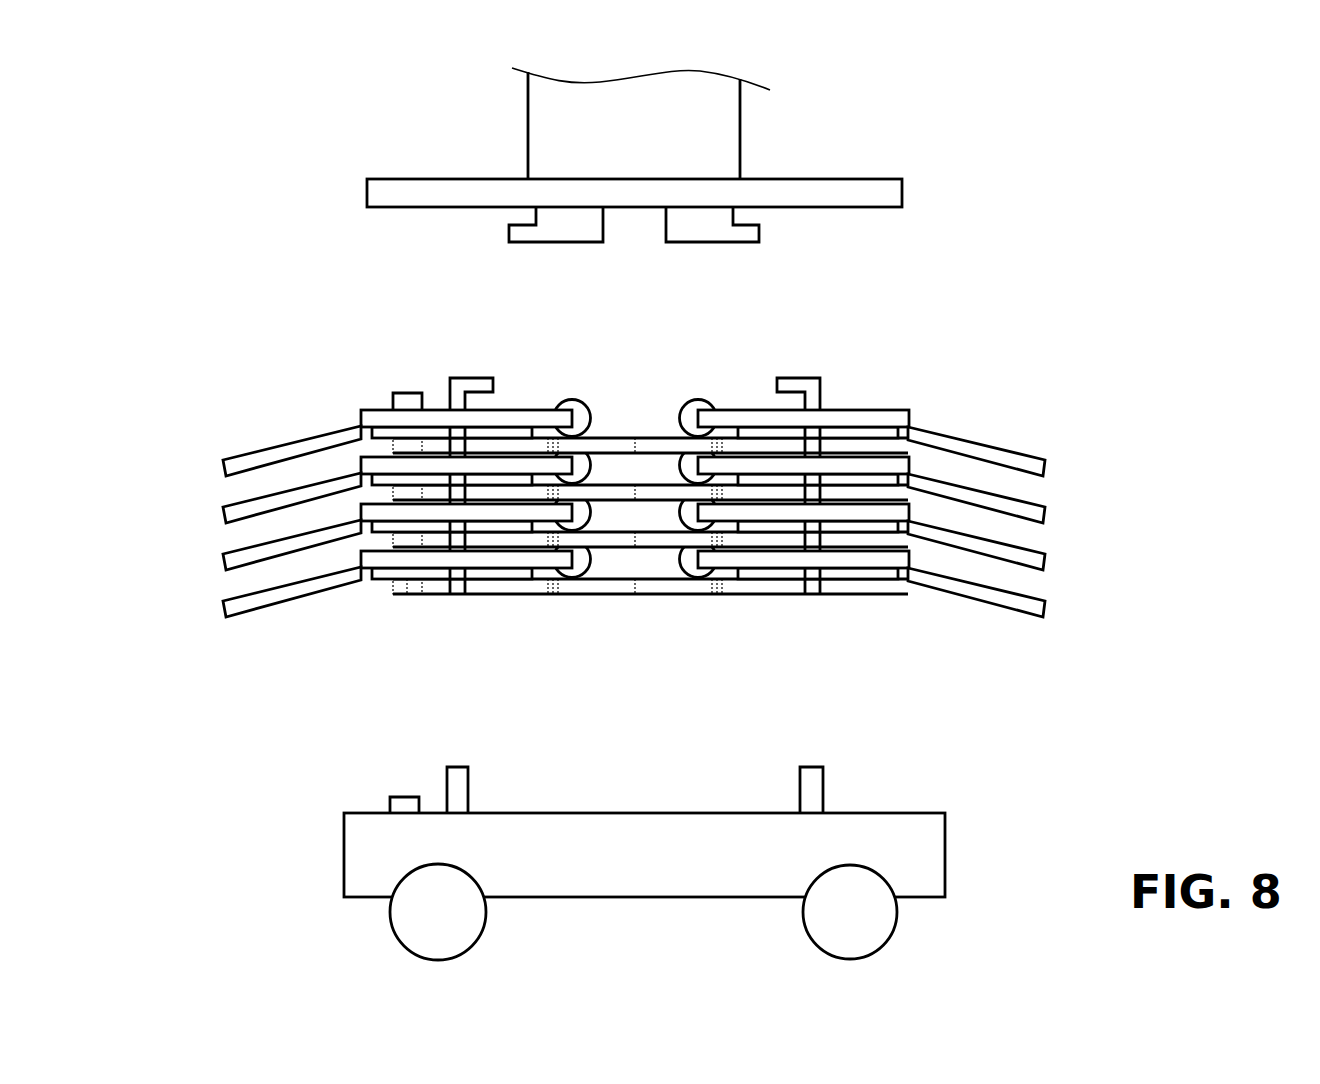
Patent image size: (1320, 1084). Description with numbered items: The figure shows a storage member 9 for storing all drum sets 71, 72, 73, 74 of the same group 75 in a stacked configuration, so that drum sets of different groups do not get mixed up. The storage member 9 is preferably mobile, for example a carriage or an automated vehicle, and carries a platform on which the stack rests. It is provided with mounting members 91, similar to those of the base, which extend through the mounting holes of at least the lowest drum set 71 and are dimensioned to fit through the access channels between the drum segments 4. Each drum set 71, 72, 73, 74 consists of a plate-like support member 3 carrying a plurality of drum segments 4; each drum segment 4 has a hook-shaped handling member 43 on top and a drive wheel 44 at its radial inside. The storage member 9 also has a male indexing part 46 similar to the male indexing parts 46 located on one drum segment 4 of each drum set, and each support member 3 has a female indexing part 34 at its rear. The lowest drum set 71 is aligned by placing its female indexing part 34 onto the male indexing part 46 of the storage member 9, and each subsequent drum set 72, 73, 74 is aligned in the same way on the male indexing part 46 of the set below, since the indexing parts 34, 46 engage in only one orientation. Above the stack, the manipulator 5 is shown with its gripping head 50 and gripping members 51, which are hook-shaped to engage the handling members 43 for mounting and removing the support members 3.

The support member 3 is at (967, 440).
The drum segment 4 is at (528, 410).
The manipulator 5 is at (366, 117).
The storage member 9 is at (292, 868).
The female indexing part 34 is at (393, 445).
The handling member 43 is at (468, 387).
The drive wheel 44 is at (572, 403).
The male indexing part 46 is at (403, 393).
The gripping head 50 is at (538, 134).
The gripping member 51 is at (580, 228).
The first drum set 71 is at (247, 457).
The second drum set 72 is at (247, 513).
The third drum set 73 is at (245, 562).
The fourth drum set 74 is at (245, 610).
The group 75 is at (208, 347).
The mounting member 91 is at (463, 773).